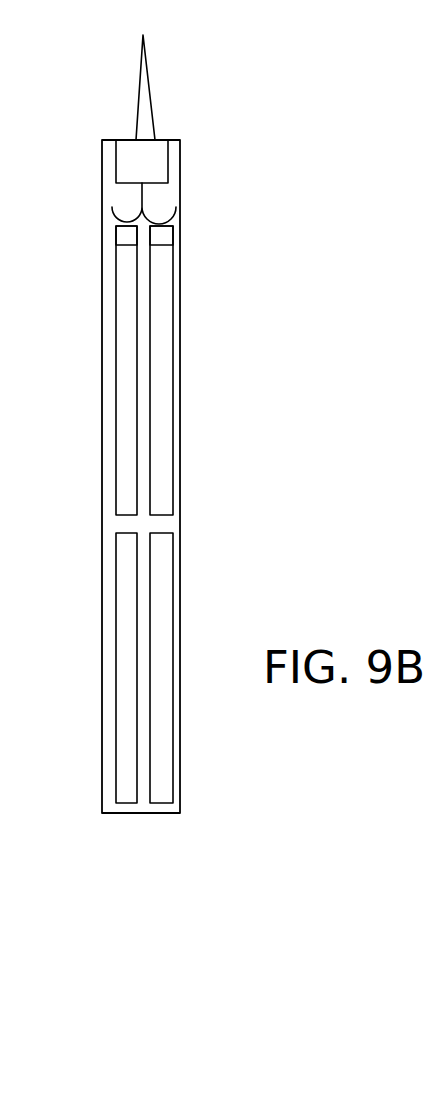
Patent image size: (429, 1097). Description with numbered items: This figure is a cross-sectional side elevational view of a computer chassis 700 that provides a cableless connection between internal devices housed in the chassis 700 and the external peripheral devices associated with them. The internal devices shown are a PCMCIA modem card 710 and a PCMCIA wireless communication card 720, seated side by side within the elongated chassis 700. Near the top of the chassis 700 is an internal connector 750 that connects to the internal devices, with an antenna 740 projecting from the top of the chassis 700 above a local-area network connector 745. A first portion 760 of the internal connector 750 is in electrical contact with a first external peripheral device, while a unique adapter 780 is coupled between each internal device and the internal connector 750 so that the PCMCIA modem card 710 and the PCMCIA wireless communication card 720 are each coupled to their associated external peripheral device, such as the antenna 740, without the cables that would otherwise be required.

The chassis 700 is at (173, 192).
The PCMCIA modem card 710 is at (127, 327).
The PCMCIA wireless communication card 720 is at (178, 308).
The antenna 740 is at (150, 93).
The local-area network connector 745 is at (180, 148).
The internal connector 750 is at (176, 210).
The first portion of the internal connector 760 is at (123, 237).
The adapter 780 is at (177, 238).